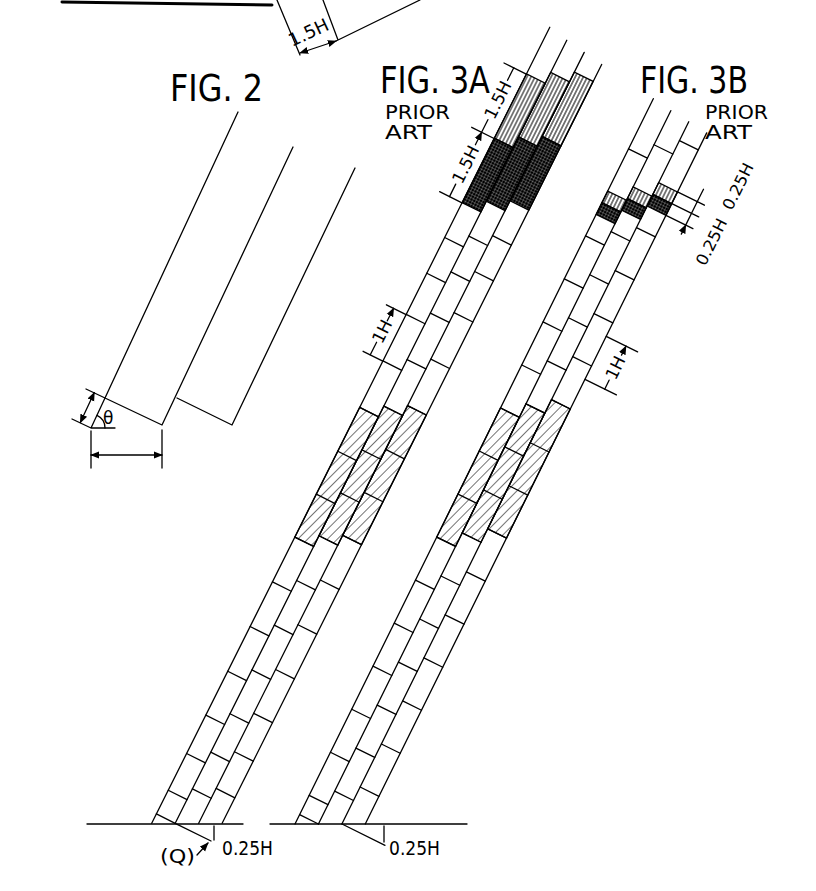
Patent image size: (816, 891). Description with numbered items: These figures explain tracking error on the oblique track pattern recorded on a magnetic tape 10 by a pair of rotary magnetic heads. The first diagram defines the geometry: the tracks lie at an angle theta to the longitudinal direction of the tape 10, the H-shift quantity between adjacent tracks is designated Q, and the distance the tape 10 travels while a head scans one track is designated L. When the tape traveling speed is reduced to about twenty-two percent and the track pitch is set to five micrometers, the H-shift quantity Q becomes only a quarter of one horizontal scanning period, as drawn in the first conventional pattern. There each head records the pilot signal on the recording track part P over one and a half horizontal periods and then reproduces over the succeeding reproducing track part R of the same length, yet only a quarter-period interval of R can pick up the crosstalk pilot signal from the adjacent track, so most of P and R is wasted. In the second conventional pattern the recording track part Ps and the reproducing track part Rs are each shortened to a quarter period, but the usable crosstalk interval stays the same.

In FIG. 3A, the magnetic tape 10 is at (112, 823).
In FIG. 3B, the magnetic tape 10 is at (452, 826).
In FIG. 3A, the reproducing track part R is at (528, 74).
In FIG. 3A, the recording track part P is at (541, 184).
In FIG. 3B, the reproducing track part Rs is at (640, 188).
In FIG. 3B, the recording track part Ps is at (658, 210).
In FIG. 2, the H-shift quantity Q is at (86, 407).
In FIG. 2, the tape travel distance L is at (126, 449).